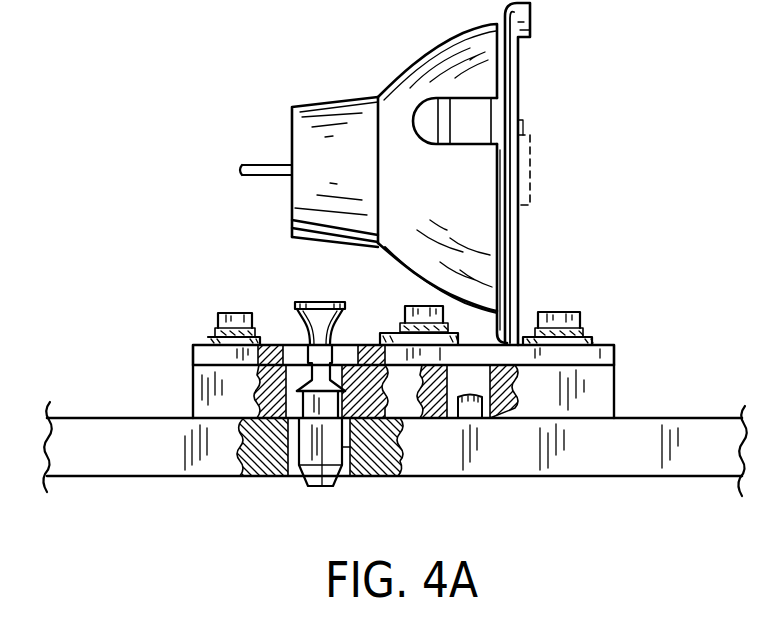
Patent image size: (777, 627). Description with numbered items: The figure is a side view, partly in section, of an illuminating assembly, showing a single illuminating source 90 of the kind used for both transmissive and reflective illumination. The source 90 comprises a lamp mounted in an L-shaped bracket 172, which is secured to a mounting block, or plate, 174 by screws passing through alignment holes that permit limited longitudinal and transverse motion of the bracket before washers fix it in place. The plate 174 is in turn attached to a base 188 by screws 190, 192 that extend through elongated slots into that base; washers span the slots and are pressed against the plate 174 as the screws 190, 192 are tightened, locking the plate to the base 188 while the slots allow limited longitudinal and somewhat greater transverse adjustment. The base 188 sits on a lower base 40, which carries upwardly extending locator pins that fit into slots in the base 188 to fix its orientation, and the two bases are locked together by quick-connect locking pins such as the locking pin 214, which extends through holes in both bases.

The base 40 is at (686, 463).
The illuminating source 90 is at (276, 128).
The L-shaped bracket 172 is at (507, 63).
The mounting block 174 is at (614, 357).
The base 188 is at (604, 392).
The screw 190 is at (225, 312).
The screw 192 is at (568, 310).
The quick-connect locking pin 214 is at (312, 301).